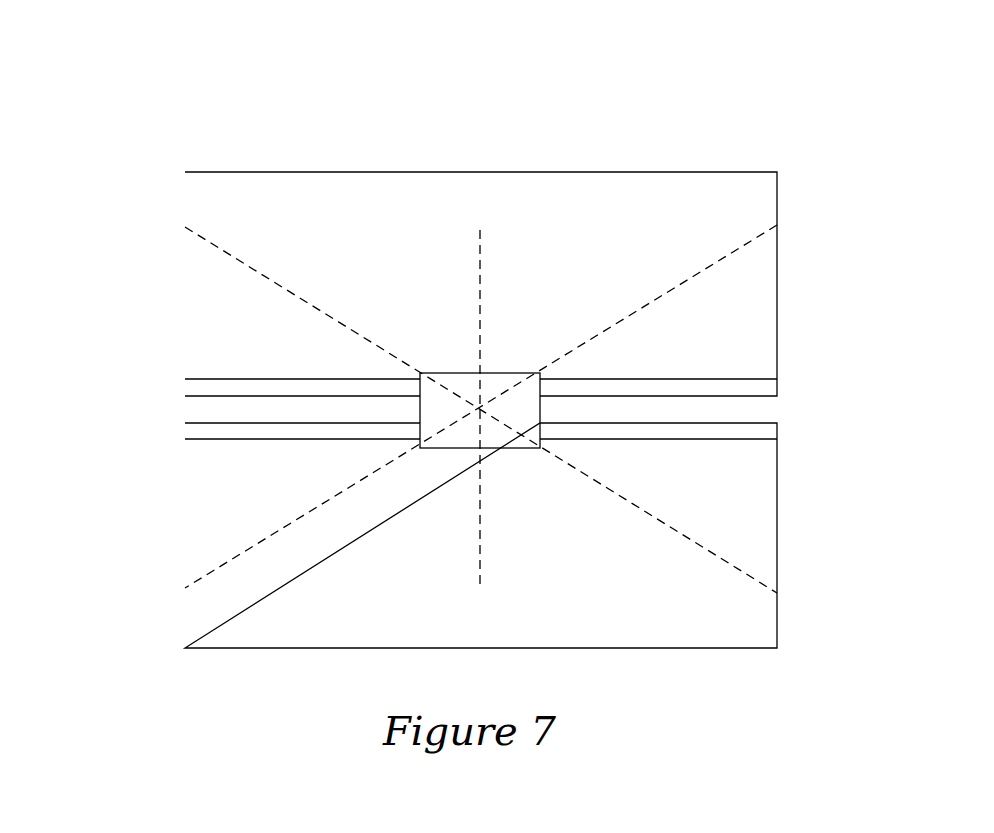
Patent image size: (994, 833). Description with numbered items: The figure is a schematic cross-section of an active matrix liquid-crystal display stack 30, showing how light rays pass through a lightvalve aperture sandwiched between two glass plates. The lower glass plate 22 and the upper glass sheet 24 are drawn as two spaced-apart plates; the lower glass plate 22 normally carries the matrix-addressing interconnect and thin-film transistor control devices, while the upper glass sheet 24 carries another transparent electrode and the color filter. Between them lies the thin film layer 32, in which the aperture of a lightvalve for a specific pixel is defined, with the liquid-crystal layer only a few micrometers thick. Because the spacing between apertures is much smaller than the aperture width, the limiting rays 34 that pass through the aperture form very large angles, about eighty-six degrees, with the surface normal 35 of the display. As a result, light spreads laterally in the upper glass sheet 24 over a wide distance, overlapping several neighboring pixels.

The active matrix liquid-crystal display stack 30 is at (748, 115).
The upper glass sheet 24 is at (298, 228).
The lower glass plate 22 is at (702, 602).
The thin film layer 32 is at (472, 442).
The limiting rays 34 is at (317, 305).
The surface normal 35 is at (480, 263).